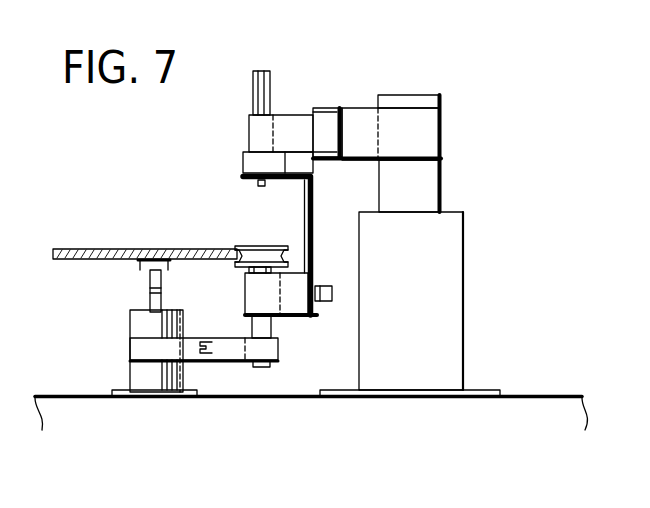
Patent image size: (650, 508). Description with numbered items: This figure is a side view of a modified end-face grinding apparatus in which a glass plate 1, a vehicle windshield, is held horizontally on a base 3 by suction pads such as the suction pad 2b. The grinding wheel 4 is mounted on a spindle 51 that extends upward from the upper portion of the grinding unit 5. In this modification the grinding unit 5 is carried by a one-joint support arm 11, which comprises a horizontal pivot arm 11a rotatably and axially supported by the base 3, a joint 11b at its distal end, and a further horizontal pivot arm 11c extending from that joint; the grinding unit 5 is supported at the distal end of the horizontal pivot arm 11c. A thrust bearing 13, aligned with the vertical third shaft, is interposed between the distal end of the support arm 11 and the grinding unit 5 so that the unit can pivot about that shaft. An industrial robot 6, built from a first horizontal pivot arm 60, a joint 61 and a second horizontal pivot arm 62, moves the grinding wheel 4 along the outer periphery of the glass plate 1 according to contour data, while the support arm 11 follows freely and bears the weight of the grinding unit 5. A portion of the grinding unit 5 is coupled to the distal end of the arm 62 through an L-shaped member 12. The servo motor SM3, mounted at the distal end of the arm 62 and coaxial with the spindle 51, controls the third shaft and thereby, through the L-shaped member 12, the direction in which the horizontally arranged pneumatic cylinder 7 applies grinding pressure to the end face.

The glass plate 1 is at (118, 248).
The suction pad 2b is at (143, 262).
The base 3 is at (143, 380).
The grinding wheel 4 is at (250, 246).
The grinding unit 5 is at (294, 299).
The spindle 51 is at (248, 268).
The industrial robot 6 is at (447, 137).
The first horizontal pivot arm 60 is at (358, 115).
The joint 61 is at (327, 158).
The second horizontal pivot arm 62 is at (288, 122).
The pneumatic cylinder 7 is at (333, 294).
The support arm 11 is at (214, 406).
The horizontal pivot arm 11a is at (167, 362).
The joint 11b is at (211, 363).
The horizontal pivot arm 11c is at (241, 361).
The L-shaped member 12 is at (313, 242).
The thrust bearing 13 is at (271, 328).
The servo motor SM3 is at (307, 91).